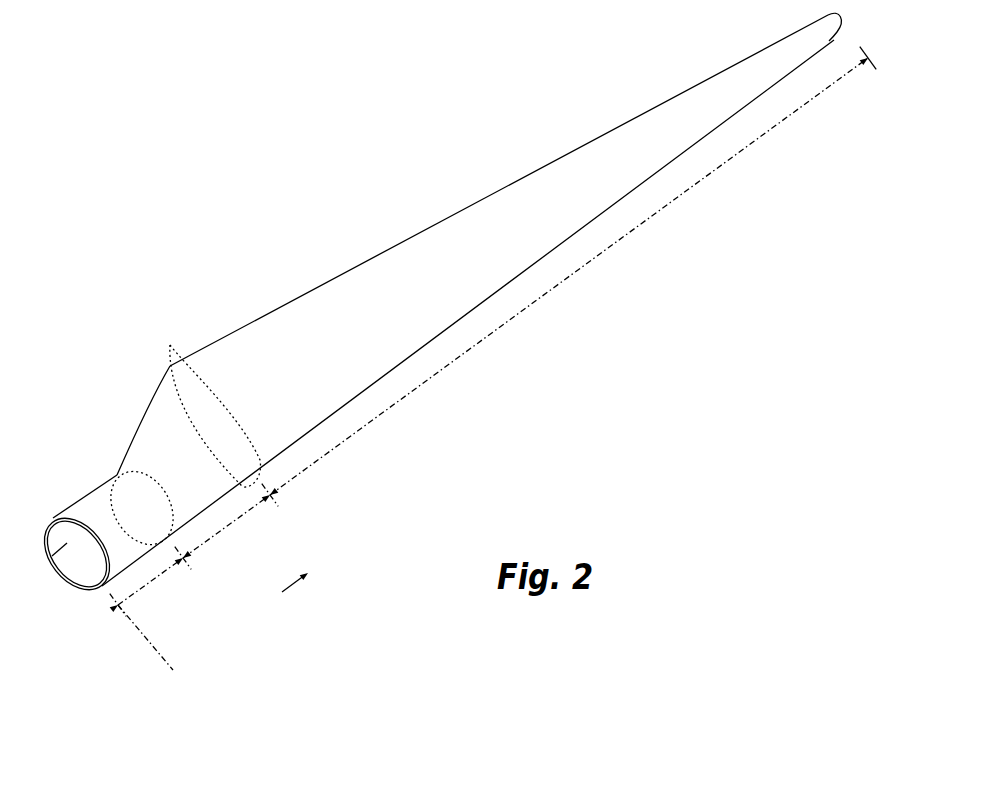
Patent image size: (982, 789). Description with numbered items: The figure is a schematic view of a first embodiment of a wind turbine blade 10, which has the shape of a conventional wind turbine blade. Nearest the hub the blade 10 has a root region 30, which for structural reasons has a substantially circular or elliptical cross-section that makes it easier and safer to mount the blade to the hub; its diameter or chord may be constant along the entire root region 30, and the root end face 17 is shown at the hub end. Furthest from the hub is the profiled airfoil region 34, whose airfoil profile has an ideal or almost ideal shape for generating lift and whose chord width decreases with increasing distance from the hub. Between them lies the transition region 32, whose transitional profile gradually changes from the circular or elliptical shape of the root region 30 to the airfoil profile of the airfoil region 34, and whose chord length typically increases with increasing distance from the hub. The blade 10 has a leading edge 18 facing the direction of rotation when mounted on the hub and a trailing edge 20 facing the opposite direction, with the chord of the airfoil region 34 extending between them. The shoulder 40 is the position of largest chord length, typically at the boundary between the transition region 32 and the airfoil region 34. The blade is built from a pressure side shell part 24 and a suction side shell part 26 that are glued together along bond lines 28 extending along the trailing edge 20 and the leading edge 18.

The wind turbine blade 10 is at (300, 197).
The root end face 17 is at (52, 556).
The leading edge 18 is at (598, 220).
The trailing edge 20 is at (490, 194).
The pressure side shell part 24 is at (67, 513).
The suction side shell part 26 is at (82, 588).
The bond lines 28 is at (62, 515).
The root region 30 is at (153, 581).
The transition region 32 is at (233, 523).
The airfoil region 34 is at (510, 319).
The shoulder 40 is at (172, 369).